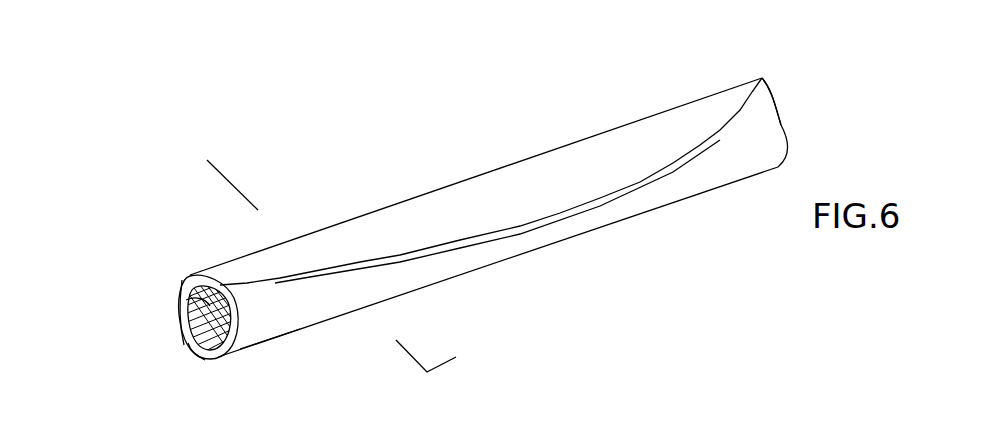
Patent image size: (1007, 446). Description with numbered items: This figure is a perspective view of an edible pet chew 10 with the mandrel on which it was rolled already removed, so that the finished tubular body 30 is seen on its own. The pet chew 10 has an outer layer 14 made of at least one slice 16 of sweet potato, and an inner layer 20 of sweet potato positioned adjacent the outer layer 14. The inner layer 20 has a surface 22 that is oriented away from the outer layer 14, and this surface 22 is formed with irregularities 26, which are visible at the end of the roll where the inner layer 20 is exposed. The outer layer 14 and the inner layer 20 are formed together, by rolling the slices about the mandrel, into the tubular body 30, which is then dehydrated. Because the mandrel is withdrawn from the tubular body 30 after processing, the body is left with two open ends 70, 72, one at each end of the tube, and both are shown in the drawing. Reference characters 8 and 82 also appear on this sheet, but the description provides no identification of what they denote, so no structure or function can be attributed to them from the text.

The section line 8 is at (224, 151).
The edible pet chew 10 is at (583, 132).
The outer layer 14 is at (187, 293).
The slice 16 is at (263, 343).
The inner layer 20 is at (188, 343).
The surface 22 is at (196, 325).
The irregularities 26 is at (190, 308).
The tubular body 30 is at (596, 215).
The open end 70 is at (182, 290).
The open end 72 is at (781, 104).
The tear strip 82 is at (639, 433).